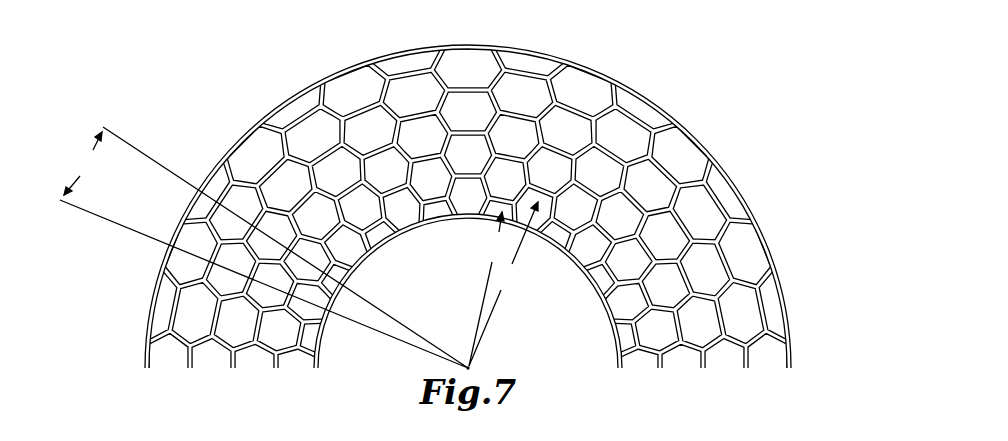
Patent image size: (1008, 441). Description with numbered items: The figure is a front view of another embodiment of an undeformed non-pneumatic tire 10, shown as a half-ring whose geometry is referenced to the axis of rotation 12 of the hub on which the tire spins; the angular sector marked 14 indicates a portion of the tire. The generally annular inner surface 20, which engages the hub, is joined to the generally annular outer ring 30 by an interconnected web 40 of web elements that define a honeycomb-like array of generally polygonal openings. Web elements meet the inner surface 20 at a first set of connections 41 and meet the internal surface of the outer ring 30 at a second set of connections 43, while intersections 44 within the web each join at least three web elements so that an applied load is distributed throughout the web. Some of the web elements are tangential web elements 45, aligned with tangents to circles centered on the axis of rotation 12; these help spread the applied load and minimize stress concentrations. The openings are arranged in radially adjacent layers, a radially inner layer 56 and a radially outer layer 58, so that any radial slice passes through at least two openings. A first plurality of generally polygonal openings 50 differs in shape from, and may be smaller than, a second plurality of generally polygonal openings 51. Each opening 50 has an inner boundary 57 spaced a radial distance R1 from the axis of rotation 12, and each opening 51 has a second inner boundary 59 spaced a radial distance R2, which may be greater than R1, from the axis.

The non-pneumatic tire 10 is at (762, 117).
The axis of rotation 12 is at (469, 367).
The angular sector 14 is at (264, 247).
The generally annular inner surface 20 is at (360, 263).
The generally annular outer ring 30 is at (734, 178).
The interconnected web 40 is at (729, 258).
The first set of connections 41 is at (467, 222).
The second set of connections 43 is at (445, 64).
The intersections 44 is at (303, 205).
The tangential web elements 45 is at (687, 327).
The first plurality of generally polygonal openings 50 is at (580, 203).
The second plurality of generally polygonal openings 51 is at (665, 280).
The radially inner layer 56 is at (243, 327).
The inner boundary 57 is at (613, 272).
The radially outer layer 58 is at (185, 318).
The second inner boundary 59 is at (547, 200).
The radial distance R1 is at (487, 289).
The radial distance R2 is at (503, 284).